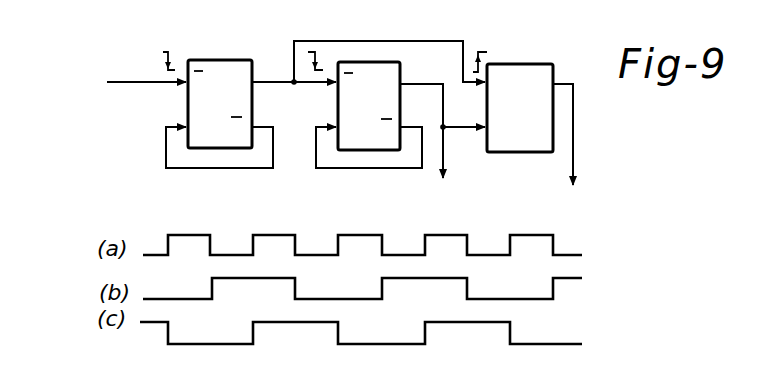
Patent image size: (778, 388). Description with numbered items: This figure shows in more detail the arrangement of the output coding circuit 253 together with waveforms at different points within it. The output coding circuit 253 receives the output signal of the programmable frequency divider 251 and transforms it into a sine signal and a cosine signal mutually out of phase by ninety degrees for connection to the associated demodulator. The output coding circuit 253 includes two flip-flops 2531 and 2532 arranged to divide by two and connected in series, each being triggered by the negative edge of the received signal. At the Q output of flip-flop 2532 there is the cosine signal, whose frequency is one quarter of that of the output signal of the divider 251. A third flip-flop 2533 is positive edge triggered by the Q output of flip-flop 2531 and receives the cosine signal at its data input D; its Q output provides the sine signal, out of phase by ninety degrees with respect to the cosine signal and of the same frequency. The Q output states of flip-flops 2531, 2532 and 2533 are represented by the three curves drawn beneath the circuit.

The programmable frequency divider 251 is at (111, 97).
The output coding circuit 253 is at (158, 117).
The flip-flop 2531 is at (219, 59).
The flip-flop 2532 is at (370, 61).
The third flip-flop 2533 is at (517, 63).